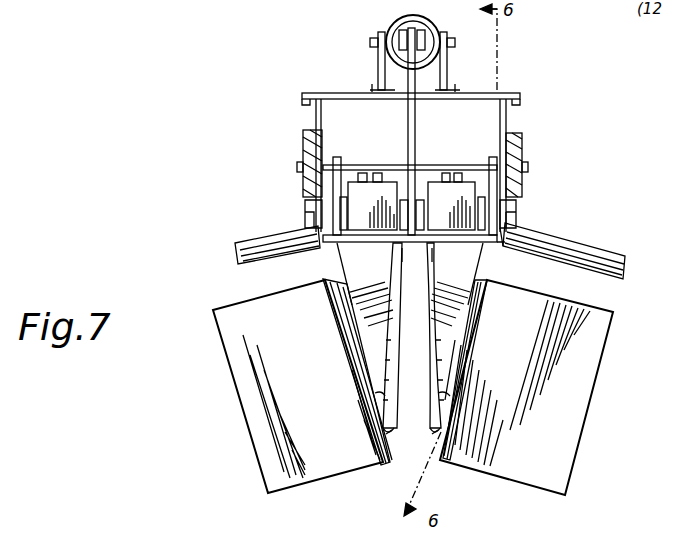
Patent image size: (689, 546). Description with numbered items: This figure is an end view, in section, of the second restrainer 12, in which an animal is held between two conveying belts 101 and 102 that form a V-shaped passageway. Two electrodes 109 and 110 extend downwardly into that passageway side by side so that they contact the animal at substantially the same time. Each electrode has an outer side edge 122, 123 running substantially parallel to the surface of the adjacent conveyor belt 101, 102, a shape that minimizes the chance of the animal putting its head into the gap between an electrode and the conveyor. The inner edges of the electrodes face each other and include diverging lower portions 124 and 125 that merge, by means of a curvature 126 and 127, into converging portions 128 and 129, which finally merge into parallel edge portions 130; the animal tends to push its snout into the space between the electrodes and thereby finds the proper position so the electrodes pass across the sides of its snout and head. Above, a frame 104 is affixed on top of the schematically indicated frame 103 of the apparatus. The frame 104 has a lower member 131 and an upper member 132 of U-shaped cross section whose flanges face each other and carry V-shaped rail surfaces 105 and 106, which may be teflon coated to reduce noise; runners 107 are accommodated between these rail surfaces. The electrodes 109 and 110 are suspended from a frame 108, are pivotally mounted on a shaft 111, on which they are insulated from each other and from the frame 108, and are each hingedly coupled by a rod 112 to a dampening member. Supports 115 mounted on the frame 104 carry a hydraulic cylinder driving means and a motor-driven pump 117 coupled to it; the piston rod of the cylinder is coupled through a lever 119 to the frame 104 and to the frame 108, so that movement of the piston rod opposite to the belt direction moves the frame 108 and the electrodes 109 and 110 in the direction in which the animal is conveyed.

The second restrainer 12 is at (598, 425).
The conveying belt 101 is at (357, 470).
The conveying belt 102 is at (460, 440).
The frame of the apparatus 103 is at (586, 252).
The frame 104 is at (510, 212).
The V-shaped rail surface 105 is at (303, 195).
The V-shaped rail surface 106 is at (303, 152).
The runner 107 is at (523, 150).
The frame 108 is at (330, 247).
The electrode 109 is at (433, 433).
The electrode 110 is at (386, 438).
The shaft 111 is at (420, 165).
The rod 112 is at (367, 172).
The support 115 is at (447, 64).
The motor-driven pump 117 is at (425, 30).
The lever 119 is at (416, 130).
The outer side edge 122 is at (360, 358).
The outer side edge 123 is at (458, 376).
The diverging lower portion 124 is at (383, 392).
The diverging lower portion 125 is at (453, 402).
The curvature 126 is at (392, 340).
The curvature 127 is at (434, 345).
The converging portion 128 is at (389, 293).
The converging portion 129 is at (440, 293).
The parallel edge portions 130 is at (438, 276).
The lower member 131 is at (518, 205).
The upper member 132 is at (314, 104).